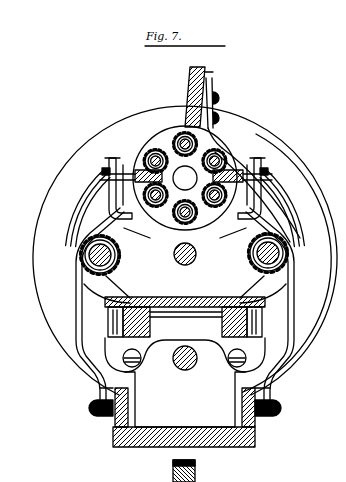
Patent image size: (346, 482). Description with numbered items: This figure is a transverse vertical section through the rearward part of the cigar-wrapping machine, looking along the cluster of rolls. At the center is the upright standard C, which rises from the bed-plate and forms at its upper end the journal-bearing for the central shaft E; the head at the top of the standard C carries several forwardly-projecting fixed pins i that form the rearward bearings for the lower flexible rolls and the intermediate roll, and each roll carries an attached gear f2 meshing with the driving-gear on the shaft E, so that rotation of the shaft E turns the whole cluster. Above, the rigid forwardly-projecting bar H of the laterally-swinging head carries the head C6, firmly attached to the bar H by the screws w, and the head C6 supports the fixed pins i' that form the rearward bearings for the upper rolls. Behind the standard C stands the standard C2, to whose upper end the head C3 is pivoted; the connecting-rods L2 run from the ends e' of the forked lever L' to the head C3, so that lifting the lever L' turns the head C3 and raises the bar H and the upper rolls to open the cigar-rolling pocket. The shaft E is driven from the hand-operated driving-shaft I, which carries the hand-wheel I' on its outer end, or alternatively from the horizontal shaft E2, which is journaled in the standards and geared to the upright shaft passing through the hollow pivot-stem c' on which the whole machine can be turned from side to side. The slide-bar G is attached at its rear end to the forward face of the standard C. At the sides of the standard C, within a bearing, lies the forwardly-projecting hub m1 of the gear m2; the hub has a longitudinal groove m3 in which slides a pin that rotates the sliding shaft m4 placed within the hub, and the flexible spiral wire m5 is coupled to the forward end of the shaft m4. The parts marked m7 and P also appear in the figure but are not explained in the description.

The bar H is at (190, 90).
The screws w is at (218, 100).
The head C6 is at (220, 142).
The standard C2 is at (261, 187).
The head C3 is at (252, 191).
The central shaft E is at (185, 178).
The gear f2 is at (178, 150).
The fixed pins i' is at (182, 165).
The fixed pins i is at (185, 185).
The connecting-rods L2 is at (76, 300).
The hand-wheel I' is at (301, 188).
The flexible spiral wire m5 is at (185, 261).
The hub m1 is at (80, 258).
The gear ring m7 is at (115, 252).
The sliding shaft m4 is at (108, 258).
The groove m3 is at (82, 236).
The gear m2 is at (78, 246).
The hand-operated driving-shaft I is at (189, 257).
The upright standard C is at (185, 331).
The slide-bar G is at (185, 317).
The horizontal shaft E2 is at (192, 361).
The forked lever L' is at (184, 417).
The hollow stem c' is at (99, 399).
The ends of lever e' is at (271, 399).
The pin P is at (195, 472).